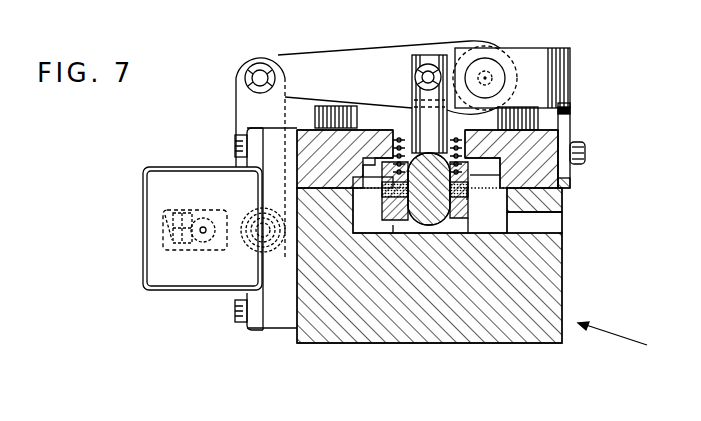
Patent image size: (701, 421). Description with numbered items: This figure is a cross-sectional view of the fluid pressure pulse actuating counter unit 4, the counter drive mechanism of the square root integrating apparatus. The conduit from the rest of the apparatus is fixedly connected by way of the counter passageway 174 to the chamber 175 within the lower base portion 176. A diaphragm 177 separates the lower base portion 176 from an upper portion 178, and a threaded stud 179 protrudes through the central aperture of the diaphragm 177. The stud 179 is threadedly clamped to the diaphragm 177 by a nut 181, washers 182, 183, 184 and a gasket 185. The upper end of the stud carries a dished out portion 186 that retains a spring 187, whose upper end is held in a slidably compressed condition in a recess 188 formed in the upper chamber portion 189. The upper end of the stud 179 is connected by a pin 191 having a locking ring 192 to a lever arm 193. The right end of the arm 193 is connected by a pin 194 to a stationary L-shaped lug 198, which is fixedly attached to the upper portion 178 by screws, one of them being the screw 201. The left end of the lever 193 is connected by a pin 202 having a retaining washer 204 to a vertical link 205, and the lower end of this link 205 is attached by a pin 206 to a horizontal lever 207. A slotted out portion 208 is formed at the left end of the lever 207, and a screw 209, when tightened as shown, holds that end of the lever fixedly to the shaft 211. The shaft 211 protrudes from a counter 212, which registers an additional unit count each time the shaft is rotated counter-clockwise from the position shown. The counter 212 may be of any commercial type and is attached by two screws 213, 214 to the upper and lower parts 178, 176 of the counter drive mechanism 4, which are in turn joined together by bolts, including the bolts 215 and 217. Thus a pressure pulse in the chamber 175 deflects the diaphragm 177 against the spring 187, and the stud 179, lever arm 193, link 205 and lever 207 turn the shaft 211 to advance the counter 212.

The fluid pressure pulse actuating counter unit 4 is at (620, 339).
The counter passageway 174 is at (560, 223).
The chamber 175 is at (480, 224).
The lower base portion 176 is at (560, 292).
The diaphragm 177 is at (473, 192).
The upper portion 178 is at (548, 176).
The threaded stud 179 is at (432, 228).
The nut 181 is at (393, 230).
The washer 182 is at (392, 208).
The washer 183 is at (392, 199).
The washer 184 is at (390, 190).
The gasket 185 is at (376, 181).
The dished out portion 186 is at (492, 173).
The spring 187 is at (463, 160).
The recess 188 is at (398, 136).
The upper chamber portion 189 is at (368, 164).
The pin 191 is at (420, 74).
The locking ring 192 is at (428, 63).
The lever arm 193 is at (355, 54).
The pin 194 is at (492, 68).
The L-shaped lug 198 is at (548, 66).
The screw 201 is at (586, 153).
The pin 202 is at (256, 71).
The retaining washer 204 is at (245, 84).
The vertical link 205 is at (248, 114).
The pin 206 is at (255, 246).
The horizontal lever 207 is at (225, 210).
The slotted out portion 208 is at (170, 228).
The screw 209 is at (160, 208).
The shaft 211 is at (203, 242).
The counter 212 is at (152, 252).
The screw 213 is at (234, 307).
The screw 214 is at (234, 143).
The bolt 215 is at (338, 112).
The bolt 217 is at (560, 111).